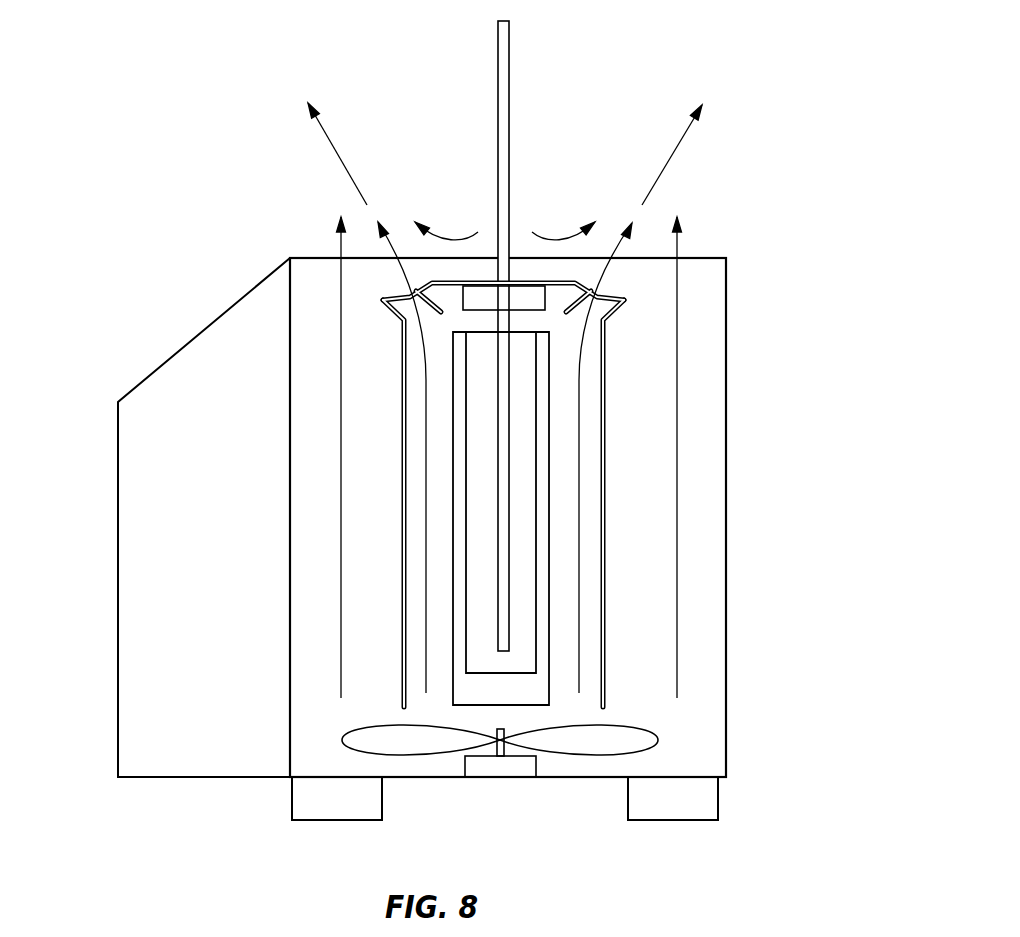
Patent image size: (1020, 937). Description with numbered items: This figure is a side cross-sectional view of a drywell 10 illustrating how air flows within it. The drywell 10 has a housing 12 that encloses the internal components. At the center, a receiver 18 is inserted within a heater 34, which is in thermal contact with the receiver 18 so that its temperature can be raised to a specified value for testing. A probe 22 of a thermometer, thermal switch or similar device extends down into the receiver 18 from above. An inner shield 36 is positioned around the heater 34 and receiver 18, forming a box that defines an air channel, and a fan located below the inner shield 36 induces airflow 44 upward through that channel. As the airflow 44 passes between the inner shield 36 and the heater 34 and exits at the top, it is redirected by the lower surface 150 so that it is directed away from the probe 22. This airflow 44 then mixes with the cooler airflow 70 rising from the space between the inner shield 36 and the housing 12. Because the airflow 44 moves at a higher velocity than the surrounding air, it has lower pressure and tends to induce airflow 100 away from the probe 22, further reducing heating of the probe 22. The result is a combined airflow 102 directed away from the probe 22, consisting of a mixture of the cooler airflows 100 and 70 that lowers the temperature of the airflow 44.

The drywell 10 is at (813, 292).
The housing 12 is at (726, 700).
The receiver 18 is at (527, 570).
The probe 22 is at (510, 80).
The heater 34 is at (543, 439).
The inner shield 36 is at (615, 602).
The airflow 44 is at (426, 510).
The cooler airflow 70 is at (341, 402).
The induced airflow 100 is at (443, 240).
The combined airflow 102 is at (332, 143).
The lower surface 150 is at (437, 314).